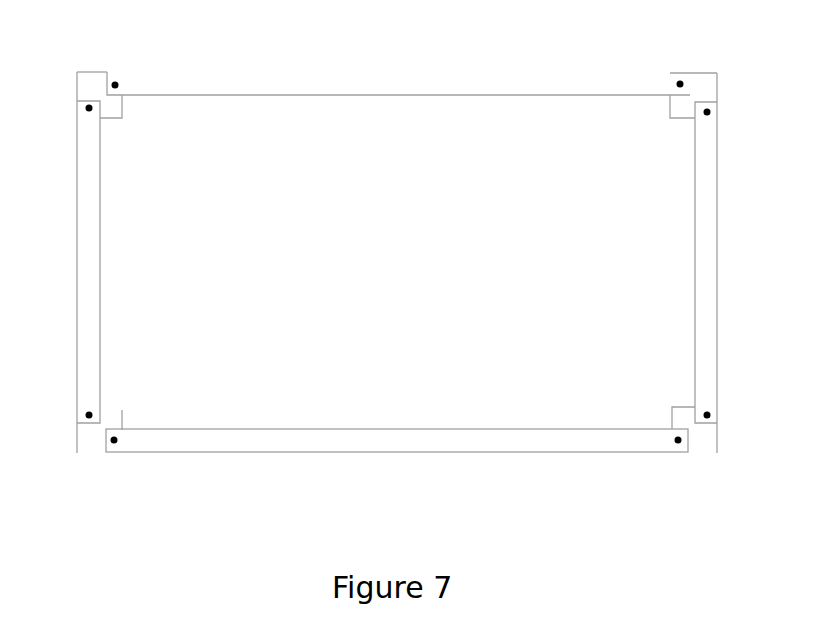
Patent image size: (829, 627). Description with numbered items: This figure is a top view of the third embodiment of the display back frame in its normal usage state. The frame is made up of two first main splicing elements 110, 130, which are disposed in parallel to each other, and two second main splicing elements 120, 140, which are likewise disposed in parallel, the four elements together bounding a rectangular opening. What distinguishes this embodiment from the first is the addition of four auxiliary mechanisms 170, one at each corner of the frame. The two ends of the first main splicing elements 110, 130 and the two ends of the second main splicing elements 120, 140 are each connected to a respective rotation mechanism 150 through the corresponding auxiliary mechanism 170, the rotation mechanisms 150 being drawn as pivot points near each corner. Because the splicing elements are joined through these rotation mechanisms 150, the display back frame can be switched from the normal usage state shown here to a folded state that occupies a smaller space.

The first main splicing element 110 is at (342, 84).
The second main splicing element 120 is at (697, 190).
The first main splicing element 130 is at (437, 442).
The second main splicing element 140 is at (97, 185).
The rotation mechanism 150 is at (117, 76).
The auxiliary mechanism 170 is at (86, 75).